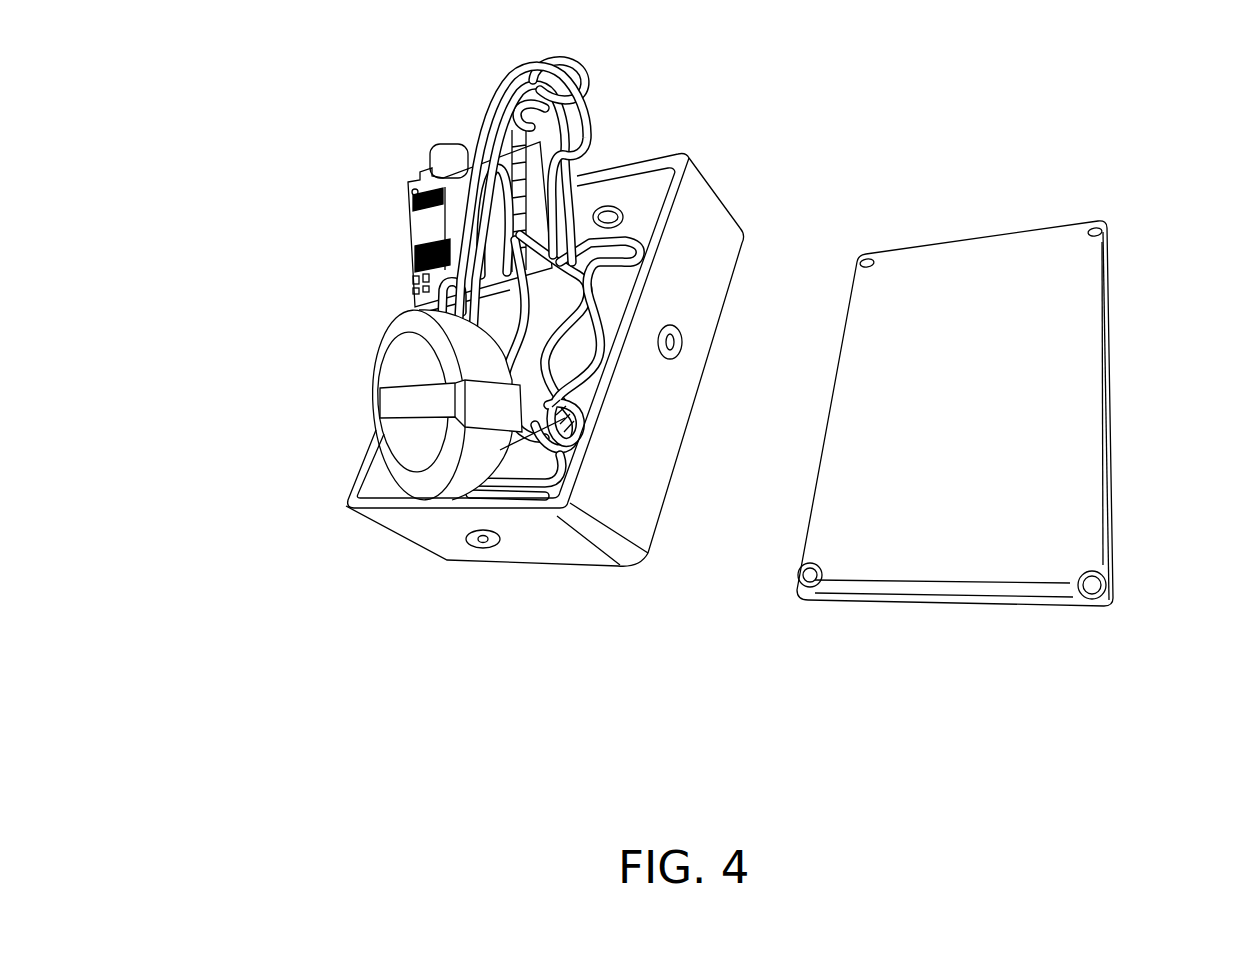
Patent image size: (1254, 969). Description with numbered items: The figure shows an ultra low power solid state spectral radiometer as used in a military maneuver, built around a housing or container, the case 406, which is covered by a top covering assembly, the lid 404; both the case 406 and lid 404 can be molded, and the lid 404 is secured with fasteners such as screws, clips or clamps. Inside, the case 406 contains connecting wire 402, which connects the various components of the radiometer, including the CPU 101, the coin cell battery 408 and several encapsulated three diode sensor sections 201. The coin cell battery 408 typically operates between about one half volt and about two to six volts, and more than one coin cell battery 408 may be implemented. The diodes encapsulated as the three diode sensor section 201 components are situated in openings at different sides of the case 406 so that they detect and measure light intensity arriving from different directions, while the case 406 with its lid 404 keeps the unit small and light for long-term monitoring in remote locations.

The CPU 101 is at (347, 246).
The connecting wire 402 is at (653, 253).
The lid 404 is at (1094, 350).
The case 406 is at (402, 541).
The coin cell battery 408 is at (368, 421).
The encapsulated three diode sensor section 201 is at (484, 564).